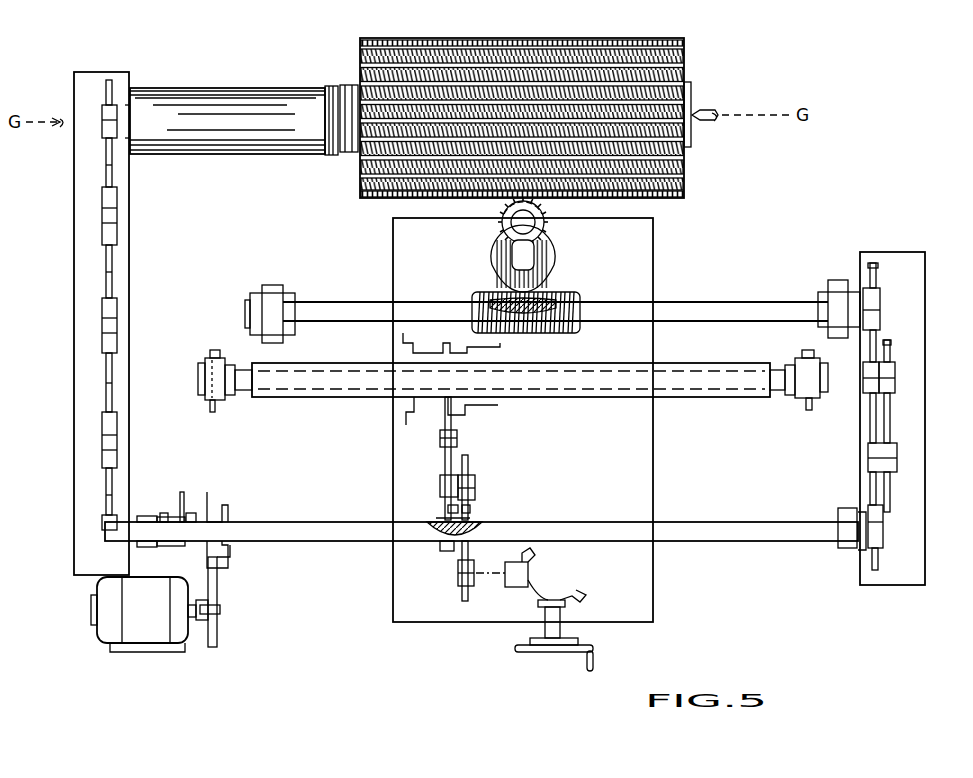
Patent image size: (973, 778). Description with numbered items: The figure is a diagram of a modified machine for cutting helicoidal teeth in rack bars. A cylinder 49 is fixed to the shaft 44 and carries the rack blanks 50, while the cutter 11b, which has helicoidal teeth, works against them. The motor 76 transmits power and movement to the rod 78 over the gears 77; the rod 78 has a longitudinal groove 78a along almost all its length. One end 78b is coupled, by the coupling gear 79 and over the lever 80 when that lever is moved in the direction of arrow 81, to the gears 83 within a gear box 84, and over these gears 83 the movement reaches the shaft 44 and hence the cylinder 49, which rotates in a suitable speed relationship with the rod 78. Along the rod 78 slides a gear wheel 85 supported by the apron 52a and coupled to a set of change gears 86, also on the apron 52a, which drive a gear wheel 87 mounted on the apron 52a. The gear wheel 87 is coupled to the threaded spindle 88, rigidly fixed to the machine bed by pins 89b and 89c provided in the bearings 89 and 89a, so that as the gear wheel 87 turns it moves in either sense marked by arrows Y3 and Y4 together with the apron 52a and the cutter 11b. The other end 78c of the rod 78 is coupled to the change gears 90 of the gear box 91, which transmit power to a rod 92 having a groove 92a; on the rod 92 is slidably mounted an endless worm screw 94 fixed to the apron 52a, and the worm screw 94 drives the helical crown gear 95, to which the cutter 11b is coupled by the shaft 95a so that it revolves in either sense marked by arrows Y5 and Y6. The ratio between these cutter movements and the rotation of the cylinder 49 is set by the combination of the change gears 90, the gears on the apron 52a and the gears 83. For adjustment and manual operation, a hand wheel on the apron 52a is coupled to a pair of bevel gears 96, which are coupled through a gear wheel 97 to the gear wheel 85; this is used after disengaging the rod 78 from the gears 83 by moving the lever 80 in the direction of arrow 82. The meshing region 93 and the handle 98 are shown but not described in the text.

The cutter 11b is at (546, 229).
The shaft 44 is at (229, 92).
The cylinder 49 is at (360, 70).
The rack blanks 50 is at (582, 78).
The apron 52a is at (653, 580).
The motor 76 is at (150, 640).
The gears 77 is at (220, 576).
The rod 78 is at (323, 524).
The longitudinal groove 78a is at (432, 522).
The end of the rod 78b is at (203, 548).
The end of the rod 78c is at (860, 548).
The coupling gear 79 is at (145, 548).
The lever 80 is at (183, 492).
The arrow 81 is at (175, 503).
The arrow 82 is at (194, 500).
The gears 83 is at (100, 180).
The gear box 84 is at (74, 322).
The gear wheel 85 is at (444, 551).
The change gears 86 is at (444, 468).
The gear wheel 87 is at (430, 410).
The threaded spindle 88 is at (338, 383).
The bearing 89 is at (802, 400).
The bearing 89a is at (222, 402).
The pin 89b is at (213, 412).
The pin 89c is at (808, 350).
The change gears 90 is at (880, 297).
The gear box 91 is at (925, 530).
The rod 92 is at (710, 302).
The groove 92a is at (497, 330).
The worm gear engagement 93 is at (540, 296).
The endless worm screw 94 is at (576, 330).
The helical crown gear 95 is at (494, 275).
The shaft 95a is at (512, 258).
The bevel gears 96 is at (548, 604).
The gear wheel 97 is at (458, 594).
The handle 98 is at (593, 652).
The arrow Y3 is at (548, 676).
The arrow Y4 is at (556, 676).
The arrow Y5 is at (512, 221).
The arrow Y6 is at (541, 221).